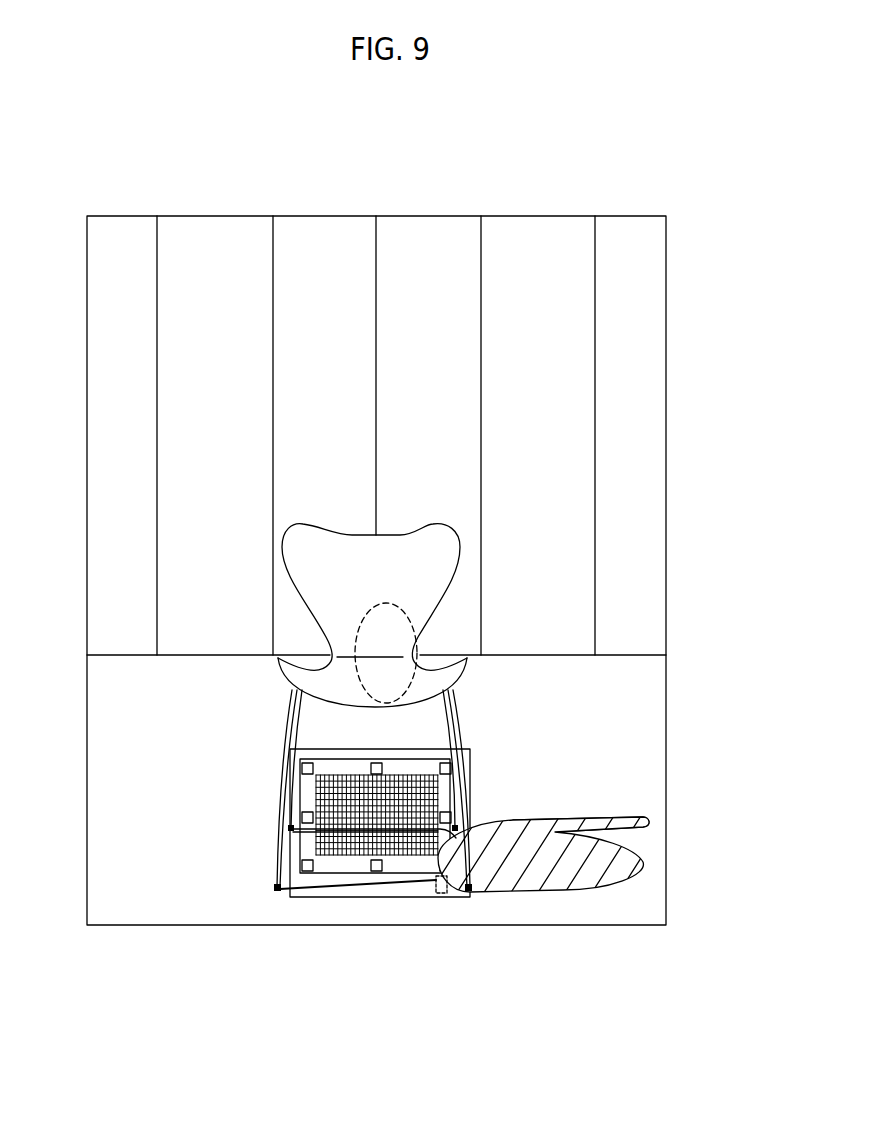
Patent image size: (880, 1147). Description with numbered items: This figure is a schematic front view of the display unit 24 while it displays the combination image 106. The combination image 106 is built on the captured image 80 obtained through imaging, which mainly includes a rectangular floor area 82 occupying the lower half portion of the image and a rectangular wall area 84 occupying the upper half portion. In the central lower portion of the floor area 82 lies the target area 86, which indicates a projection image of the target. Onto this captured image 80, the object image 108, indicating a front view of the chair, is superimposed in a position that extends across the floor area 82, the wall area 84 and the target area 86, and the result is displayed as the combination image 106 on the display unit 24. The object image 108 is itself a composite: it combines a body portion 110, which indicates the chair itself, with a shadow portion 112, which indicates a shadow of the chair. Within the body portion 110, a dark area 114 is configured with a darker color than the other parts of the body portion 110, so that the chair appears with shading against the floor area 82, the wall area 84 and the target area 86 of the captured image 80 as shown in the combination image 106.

The combination image 106 is at (267, 173).
The display unit 24 is at (380, 207).
The object image 108 is at (580, 619).
The body portion 110 is at (413, 587).
The shadow portion 112 is at (540, 818).
The dark area 114 is at (409, 704).
The captured image 80 is at (517, 790).
The floor area 82 is at (653, 867).
The wall area 84 is at (643, 627).
The target area 86 is at (410, 892).